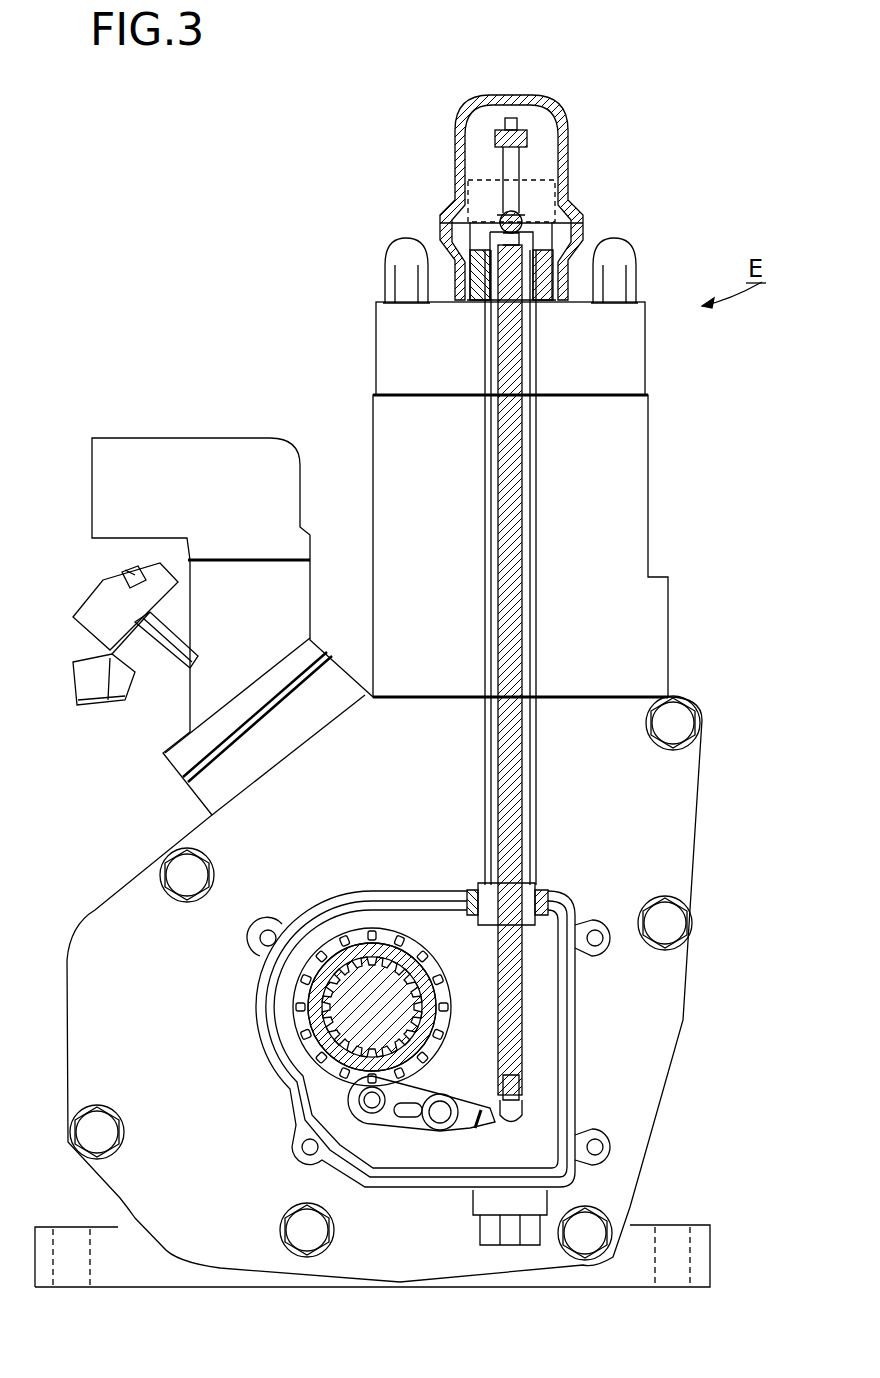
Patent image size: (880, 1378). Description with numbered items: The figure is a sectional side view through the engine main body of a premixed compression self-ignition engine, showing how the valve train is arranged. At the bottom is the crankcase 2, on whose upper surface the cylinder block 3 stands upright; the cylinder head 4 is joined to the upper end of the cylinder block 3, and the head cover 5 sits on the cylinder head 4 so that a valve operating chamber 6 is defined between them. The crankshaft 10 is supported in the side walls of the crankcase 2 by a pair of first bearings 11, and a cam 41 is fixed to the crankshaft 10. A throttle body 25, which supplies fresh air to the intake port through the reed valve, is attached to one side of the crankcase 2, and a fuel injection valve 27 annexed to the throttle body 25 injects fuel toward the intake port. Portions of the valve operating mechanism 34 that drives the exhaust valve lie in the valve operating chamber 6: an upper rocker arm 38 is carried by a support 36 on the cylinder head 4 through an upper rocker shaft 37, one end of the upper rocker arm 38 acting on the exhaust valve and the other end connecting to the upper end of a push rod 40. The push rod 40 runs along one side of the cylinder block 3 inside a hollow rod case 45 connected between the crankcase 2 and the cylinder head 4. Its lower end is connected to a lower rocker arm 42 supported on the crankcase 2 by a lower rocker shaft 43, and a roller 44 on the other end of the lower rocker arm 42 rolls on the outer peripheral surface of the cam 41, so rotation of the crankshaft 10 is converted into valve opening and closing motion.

The crankcase 2 is at (645, 858).
The cylinder block 3 is at (658, 640).
The cylinder head 4 is at (628, 344).
The head cover 5 is at (570, 150).
The valve operating chamber 6 is at (540, 130).
The crankshaft 10 is at (384, 1020).
The first bearings 11 is at (295, 1014).
The throttle body 25 is at (268, 620).
The fuel injection valve 27 is at (160, 690).
The valve operating mechanism 34 is at (490, 148).
The support 36 is at (540, 232).
The upper rocker shaft 37 is at (470, 195).
The upper rocker arm 38 is at (525, 200).
The push rod 40 is at (512, 485).
The cam 41 is at (364, 945).
The lower rocker arm 42 is at (412, 1128).
The lower rocker shaft 43 is at (442, 1126).
The roller 44 is at (372, 1122).
The hollow rod case 45 is at (537, 555).